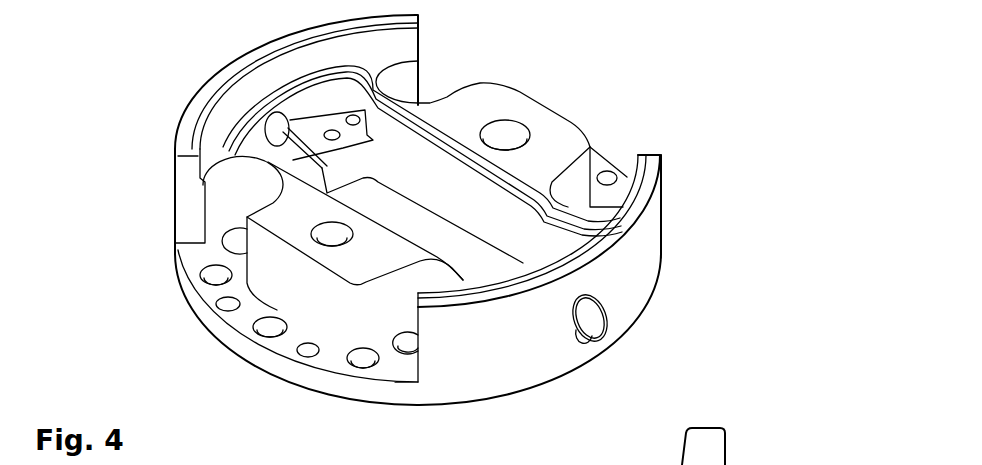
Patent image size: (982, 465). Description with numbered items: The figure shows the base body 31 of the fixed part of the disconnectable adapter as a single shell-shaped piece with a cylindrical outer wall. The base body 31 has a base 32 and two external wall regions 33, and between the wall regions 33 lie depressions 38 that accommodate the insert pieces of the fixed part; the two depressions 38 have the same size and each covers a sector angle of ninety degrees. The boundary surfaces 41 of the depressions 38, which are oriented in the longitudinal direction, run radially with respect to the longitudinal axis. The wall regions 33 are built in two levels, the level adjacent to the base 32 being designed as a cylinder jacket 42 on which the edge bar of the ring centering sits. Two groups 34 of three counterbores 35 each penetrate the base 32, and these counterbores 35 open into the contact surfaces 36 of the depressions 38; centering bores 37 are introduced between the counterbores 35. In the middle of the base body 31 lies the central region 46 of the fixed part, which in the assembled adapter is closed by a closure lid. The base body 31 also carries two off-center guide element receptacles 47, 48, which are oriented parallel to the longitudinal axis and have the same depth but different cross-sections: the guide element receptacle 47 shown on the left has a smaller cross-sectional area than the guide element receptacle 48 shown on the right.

The base body 31 is at (668, 235).
The base 32 is at (455, 242).
The external wall regions 33 is at (213, 135).
The groups of counterbores 34 is at (200, 278).
The counterbores 35 is at (262, 327).
The contact surfaces 36 is at (278, 345).
The centering bores 37 is at (223, 304).
The depressions 38 is at (183, 234).
The boundary surfaces 41 is at (188, 159).
The cylinder jacket 42 is at (647, 222).
The central region 46 is at (347, 147).
The guide element receptacle 47 is at (323, 227).
The guide element receptacle 48 is at (505, 127).